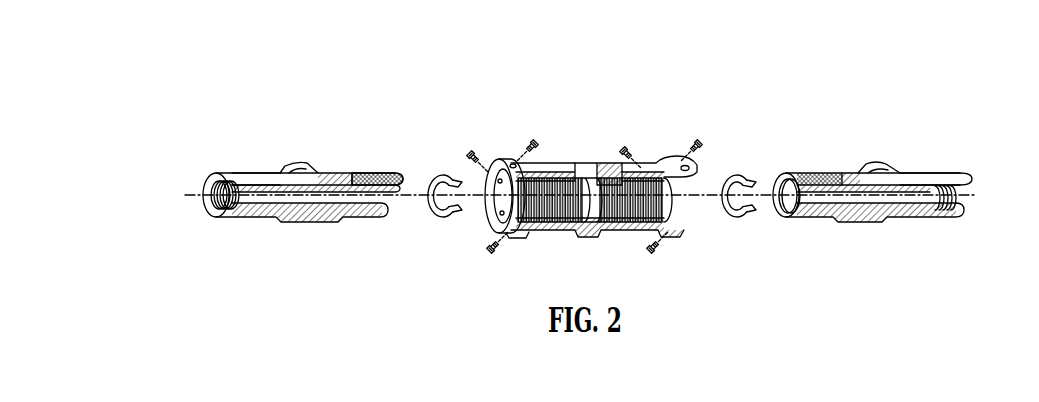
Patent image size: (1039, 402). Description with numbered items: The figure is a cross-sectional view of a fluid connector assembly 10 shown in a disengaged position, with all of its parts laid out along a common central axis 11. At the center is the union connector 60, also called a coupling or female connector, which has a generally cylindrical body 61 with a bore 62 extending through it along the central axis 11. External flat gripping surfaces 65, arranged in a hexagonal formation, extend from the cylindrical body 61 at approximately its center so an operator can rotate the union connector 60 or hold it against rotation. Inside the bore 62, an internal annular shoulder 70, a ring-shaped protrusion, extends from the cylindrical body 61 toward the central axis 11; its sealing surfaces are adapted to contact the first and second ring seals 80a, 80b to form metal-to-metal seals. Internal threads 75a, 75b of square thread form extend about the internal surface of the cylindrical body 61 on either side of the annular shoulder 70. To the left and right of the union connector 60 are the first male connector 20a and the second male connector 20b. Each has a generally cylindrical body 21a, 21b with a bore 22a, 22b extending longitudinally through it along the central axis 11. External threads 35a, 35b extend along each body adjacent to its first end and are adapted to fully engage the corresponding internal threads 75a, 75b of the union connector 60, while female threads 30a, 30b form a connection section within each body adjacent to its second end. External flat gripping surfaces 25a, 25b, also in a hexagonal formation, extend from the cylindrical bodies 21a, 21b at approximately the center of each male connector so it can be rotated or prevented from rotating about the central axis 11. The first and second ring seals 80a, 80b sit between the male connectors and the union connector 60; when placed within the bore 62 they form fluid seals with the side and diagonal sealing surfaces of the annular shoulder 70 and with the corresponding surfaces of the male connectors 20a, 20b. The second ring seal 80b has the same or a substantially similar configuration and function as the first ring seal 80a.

The fluid connector assembly 10 is at (491, 42).
The central axis 11 is at (198, 192).
The first male connector 20a is at (300, 132).
The second male connector 20b is at (869, 135).
The cylindrical body 21a is at (262, 178).
The cylindrical body 21b is at (933, 178).
The bore 22a is at (198, 205).
The bore 22b is at (770, 212).
The gripping surfaces 25a is at (304, 164).
The gripping surfaces 25b is at (883, 165).
The female threads 30a is at (228, 207).
The female threads 30b is at (937, 208).
The external threads 35a is at (381, 172).
The external threads 35b is at (816, 172).
The union connector 60 is at (578, 121).
The cylindrical body 61 is at (563, 176).
The bore 62 is at (481, 219).
The gripping surfaces 65 is at (606, 170).
The annular shoulder 70 is at (596, 214).
The internal threads 75a is at (552, 207).
The internal threads 75b is at (631, 212).
The first ring seal 80a is at (441, 160).
The second ring seal 80b is at (733, 158).